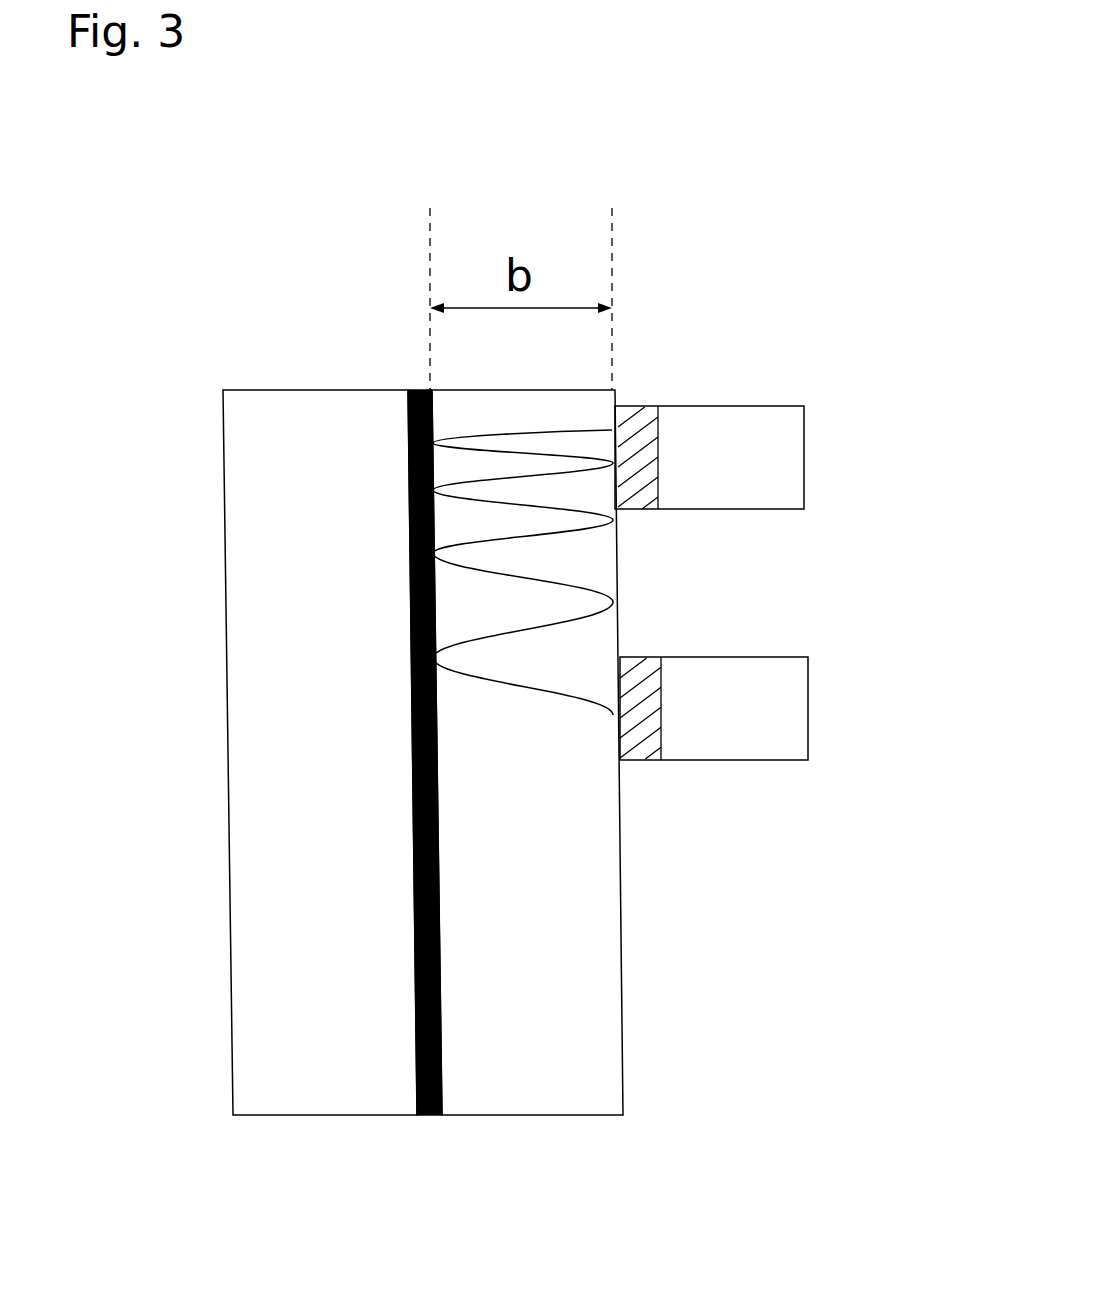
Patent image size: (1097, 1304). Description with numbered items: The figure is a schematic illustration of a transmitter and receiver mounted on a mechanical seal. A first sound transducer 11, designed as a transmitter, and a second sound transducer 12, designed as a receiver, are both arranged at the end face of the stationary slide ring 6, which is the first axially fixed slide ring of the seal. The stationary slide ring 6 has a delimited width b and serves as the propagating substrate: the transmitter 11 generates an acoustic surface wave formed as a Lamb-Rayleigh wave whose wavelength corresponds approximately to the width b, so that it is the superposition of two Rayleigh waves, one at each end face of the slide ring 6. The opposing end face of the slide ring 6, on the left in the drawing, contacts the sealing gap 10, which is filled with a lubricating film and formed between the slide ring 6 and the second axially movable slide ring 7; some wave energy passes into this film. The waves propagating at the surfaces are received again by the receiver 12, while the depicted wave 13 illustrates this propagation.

The first axially fixed slide ring 6 is at (572, 1028).
The second axially movable slide ring 7 is at (275, 1059).
The sealing gap 10 is at (400, 867).
The first sound transducer 11 is at (787, 736).
The second sound transducer 12 is at (783, 419).
The wave 13 is at (455, 587).